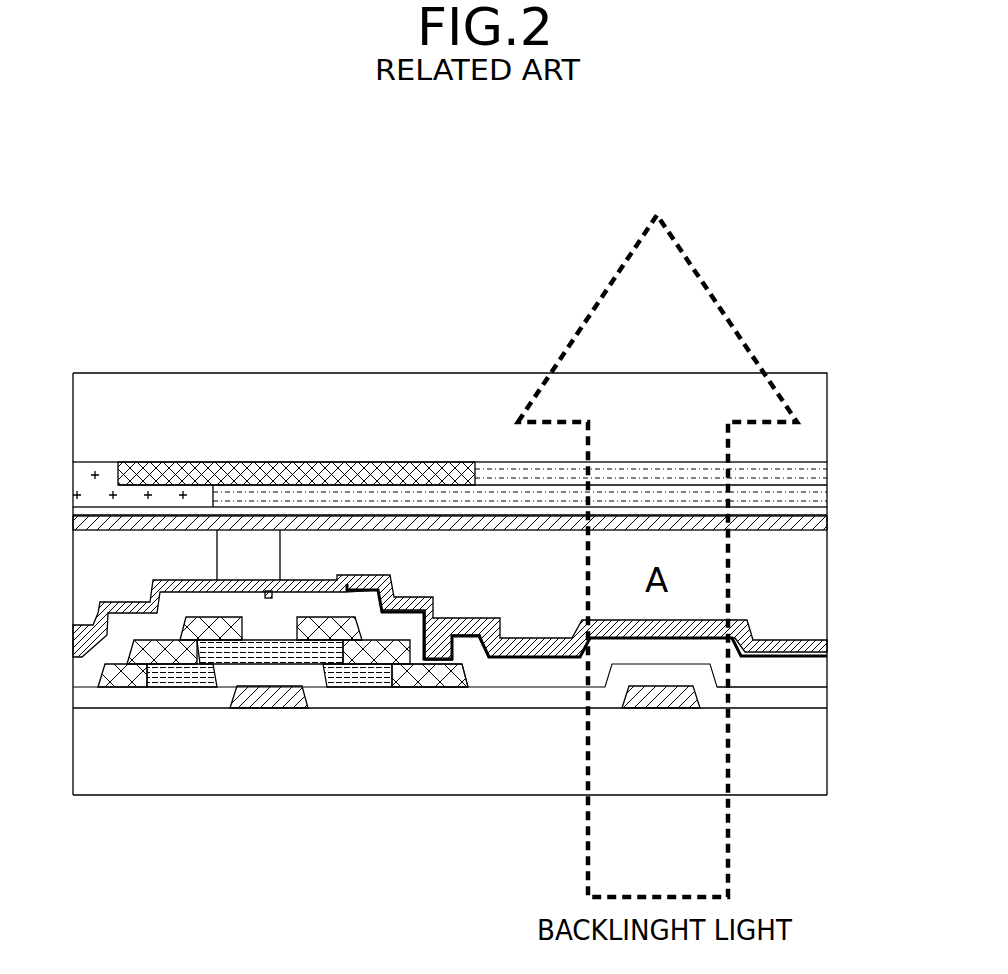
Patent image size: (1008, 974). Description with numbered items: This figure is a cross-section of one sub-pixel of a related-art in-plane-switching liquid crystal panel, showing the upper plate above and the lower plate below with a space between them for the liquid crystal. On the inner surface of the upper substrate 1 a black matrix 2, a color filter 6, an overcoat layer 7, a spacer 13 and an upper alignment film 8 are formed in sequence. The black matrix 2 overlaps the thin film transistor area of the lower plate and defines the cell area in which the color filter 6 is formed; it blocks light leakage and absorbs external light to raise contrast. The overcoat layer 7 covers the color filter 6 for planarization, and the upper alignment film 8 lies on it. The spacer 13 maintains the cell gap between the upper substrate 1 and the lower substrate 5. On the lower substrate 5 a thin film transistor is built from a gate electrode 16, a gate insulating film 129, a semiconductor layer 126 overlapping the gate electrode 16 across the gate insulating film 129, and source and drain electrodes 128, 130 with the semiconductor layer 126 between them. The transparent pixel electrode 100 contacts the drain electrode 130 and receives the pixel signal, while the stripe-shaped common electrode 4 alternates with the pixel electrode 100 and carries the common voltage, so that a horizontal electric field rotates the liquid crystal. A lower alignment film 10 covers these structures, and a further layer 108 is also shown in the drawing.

The upper substrate 1 is at (827, 424).
The black matrix 2 is at (262, 462).
The color filter 6 is at (827, 478).
The overcoat layer 7 is at (827, 512).
The upper alignment film 8 is at (827, 527).
The spacer 13 is at (283, 545).
The lower substrate 5 is at (827, 733).
The gate electrode 16 is at (267, 704).
The common electrode 4 is at (666, 700).
The gate insulating film 129 is at (508, 700).
The source electrode 128 is at (118, 688).
The semiconductor layer 126 is at (192, 688).
The drain electrode 130 is at (410, 678).
The lower alignment film 10 is at (827, 641).
The pixel electrode 100 is at (827, 652).
The protective layer 108 is at (827, 676).